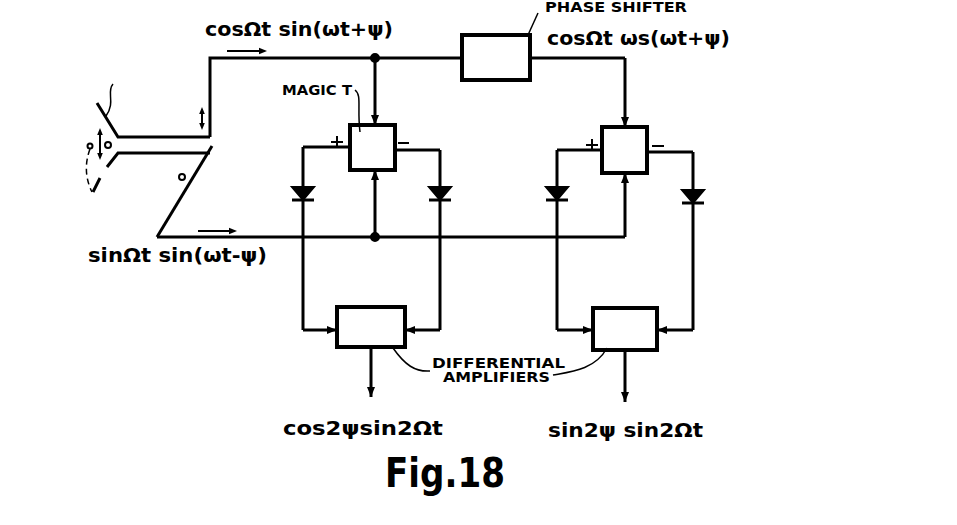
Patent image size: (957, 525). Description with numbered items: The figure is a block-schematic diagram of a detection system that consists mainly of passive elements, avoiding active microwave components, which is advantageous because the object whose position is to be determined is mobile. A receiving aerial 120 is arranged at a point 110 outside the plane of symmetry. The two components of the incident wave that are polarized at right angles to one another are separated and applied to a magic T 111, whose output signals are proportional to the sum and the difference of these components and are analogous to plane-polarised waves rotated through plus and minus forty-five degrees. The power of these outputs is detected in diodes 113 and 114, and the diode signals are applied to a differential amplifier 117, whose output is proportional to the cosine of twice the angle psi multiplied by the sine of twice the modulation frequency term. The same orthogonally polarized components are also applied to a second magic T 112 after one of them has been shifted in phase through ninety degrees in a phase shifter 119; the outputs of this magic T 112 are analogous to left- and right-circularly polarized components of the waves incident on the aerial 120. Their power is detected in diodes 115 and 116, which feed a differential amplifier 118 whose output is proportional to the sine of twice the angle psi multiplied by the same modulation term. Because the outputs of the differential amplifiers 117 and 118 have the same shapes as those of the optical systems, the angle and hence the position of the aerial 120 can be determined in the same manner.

The point 110 is at (135, 182).
The magic T 111 is at (388, 124).
The magic T 112 is at (638, 126).
The diode 113 is at (300, 186).
The diode 114 is at (447, 186).
The diode 115 is at (555, 187).
The diode 116 is at (695, 189).
The differential amplifier 117 is at (352, 349).
The differential amplifier 118 is at (638, 351).
The phase shifter 119 is at (493, 35).
The receiving aerial 120 is at (135, 108).